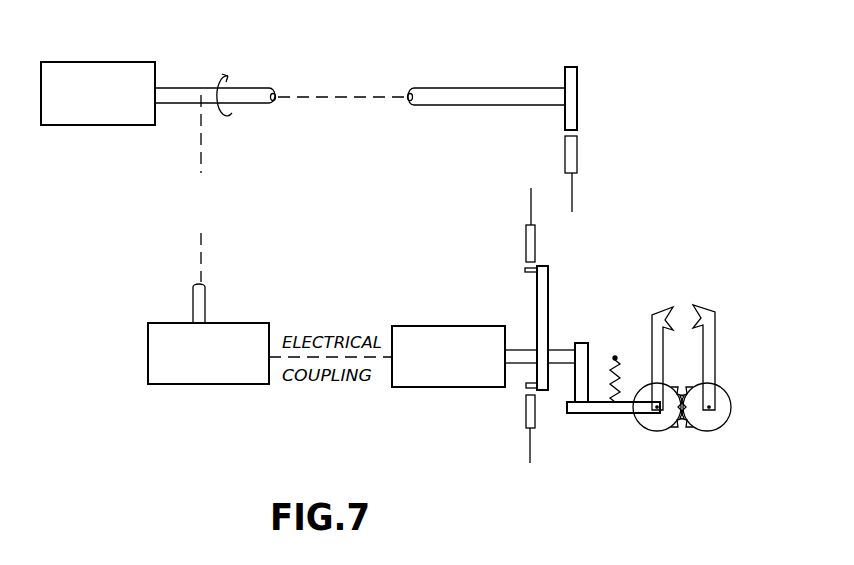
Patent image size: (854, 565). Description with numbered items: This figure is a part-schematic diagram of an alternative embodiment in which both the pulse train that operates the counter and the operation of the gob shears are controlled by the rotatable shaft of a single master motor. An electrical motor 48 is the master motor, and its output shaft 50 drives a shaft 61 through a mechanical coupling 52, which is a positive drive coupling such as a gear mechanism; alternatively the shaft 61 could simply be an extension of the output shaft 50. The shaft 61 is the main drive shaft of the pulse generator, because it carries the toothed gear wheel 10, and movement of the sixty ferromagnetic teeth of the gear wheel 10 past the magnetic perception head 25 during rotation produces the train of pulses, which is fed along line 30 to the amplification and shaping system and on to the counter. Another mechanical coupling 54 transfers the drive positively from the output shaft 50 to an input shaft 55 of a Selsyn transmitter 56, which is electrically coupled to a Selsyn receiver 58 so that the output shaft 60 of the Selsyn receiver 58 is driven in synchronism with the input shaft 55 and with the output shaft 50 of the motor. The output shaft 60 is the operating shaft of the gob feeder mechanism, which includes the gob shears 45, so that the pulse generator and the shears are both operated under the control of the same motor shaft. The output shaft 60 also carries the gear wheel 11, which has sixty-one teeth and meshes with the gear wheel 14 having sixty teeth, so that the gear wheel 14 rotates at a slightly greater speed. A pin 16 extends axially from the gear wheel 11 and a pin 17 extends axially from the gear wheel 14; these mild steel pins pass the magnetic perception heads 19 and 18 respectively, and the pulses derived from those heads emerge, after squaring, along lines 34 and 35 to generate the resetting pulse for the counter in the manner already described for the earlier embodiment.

The electrical motor 48 is at (105, 62).
The output shaft 50 is at (183, 88).
The mechanical coupling 52 is at (345, 61).
The shaft 61 is at (478, 90).
The gear wheel 10 is at (577, 78).
The perception head 25 is at (577, 155).
The line 30 is at (573, 193).
The line 34 is at (531, 200).
The magnetic perception head 18 is at (526, 240).
The pin 17 is at (525, 270).
The gear wheel 14 is at (549, 290).
The output shaft 60 is at (520, 348).
The gear wheel 11 is at (549, 340).
The pin 16 is at (526, 388).
The magnetic perception head 19 is at (526, 420).
The line 35 is at (530, 455).
The gob shears 45 is at (693, 294).
The mechanical coupling 54 is at (128, 221).
The input shaft 55 is at (193, 295).
The Selsyn transmitter 56 is at (192, 377).
The Selsyn receiver 58 is at (461, 369).